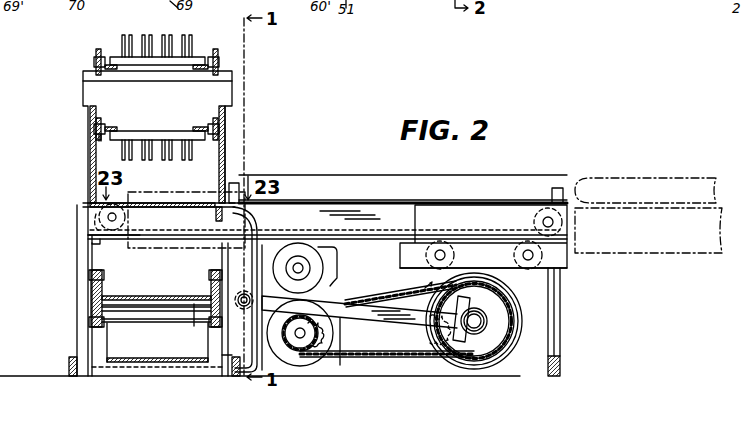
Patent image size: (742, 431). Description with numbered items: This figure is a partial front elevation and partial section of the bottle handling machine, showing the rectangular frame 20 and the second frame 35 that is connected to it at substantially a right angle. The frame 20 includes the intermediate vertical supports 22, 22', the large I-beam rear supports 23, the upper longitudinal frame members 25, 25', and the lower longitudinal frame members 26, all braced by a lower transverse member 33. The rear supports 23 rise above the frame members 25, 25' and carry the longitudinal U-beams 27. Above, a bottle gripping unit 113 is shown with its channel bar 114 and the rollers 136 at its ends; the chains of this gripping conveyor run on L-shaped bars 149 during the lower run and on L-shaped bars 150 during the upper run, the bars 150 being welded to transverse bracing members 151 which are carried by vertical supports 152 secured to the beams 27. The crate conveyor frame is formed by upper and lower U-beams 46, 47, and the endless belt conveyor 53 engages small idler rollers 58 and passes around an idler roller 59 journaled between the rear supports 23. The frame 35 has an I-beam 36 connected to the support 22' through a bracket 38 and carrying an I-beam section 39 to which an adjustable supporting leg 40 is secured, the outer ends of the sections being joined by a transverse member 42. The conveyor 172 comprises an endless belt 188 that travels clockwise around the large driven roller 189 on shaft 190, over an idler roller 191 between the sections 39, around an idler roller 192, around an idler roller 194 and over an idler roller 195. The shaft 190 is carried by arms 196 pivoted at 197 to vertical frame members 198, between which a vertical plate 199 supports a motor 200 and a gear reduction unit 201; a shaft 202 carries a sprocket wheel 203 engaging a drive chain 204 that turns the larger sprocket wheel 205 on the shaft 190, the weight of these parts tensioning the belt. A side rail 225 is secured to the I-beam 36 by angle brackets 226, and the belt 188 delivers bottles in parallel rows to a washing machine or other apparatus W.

The frame 20 is at (70, 267).
The intermediate vertical support 22 is at (204, 309).
The intermediate vertical support 22' is at (71, 309).
The rear vertical support 23 is at (88, 158).
The longitudinal frame member 25 is at (202, 216).
The longitudinal frame member 25' is at (82, 217).
The lower longitudinal frame member 26 is at (70, 356).
The U-beam 27 is at (86, 121).
The lower transverse member 33 is at (162, 374).
The second frame 35 is at (574, 294).
The I-beam 36 is at (480, 218).
The bracket 38 is at (99, 247).
The I-beam section 39 is at (405, 252).
The adjustable supporting leg 40 is at (562, 353).
The transverse member 42 is at (566, 262).
The upper U-beam 46 is at (102, 284).
The lower U-beam 47 is at (103, 297).
The endless belt conveyor 53 is at (138, 297).
The idler roller 58 is at (194, 313).
The idler roller 59 is at (151, 311).
The bottle gripping unit 113 is at (193, 27).
The channel bar 114 is at (176, 60).
The roller 136 is at (110, 42).
The L-shaped bar 149 is at (98, 136).
The L-shaped bar 150 is at (93, 60).
The transverse bracing member 151 is at (180, 79).
The vertical support 152 is at (82, 90).
The conveyor 172 is at (351, 186).
The endless belt 188 is at (150, 203).
The driven roller 189 is at (513, 341).
The shaft 190 is at (477, 323).
The idler roller 191 is at (420, 266).
The idler roller 192 is at (100, 229).
The idler roller 194 is at (540, 217).
The idler roller 195 is at (536, 255).
The arm 196 is at (342, 303).
The pivot 197 is at (252, 301).
The vertical frame member 198 is at (259, 231).
The vertical plate 199 is at (226, 251).
The motor 200 is at (320, 258).
The gear reduction unit 201 is at (335, 337).
The shaft 202 is at (301, 327).
The sprocket wheel 203 is at (324, 331).
The drive chain 204 is at (412, 359).
The sprocket wheel 205 is at (440, 330).
The side rail 225 is at (428, 181).
The angle bracket 226 is at (237, 182).
The washing machine or other apparatus W is at (678, 160).